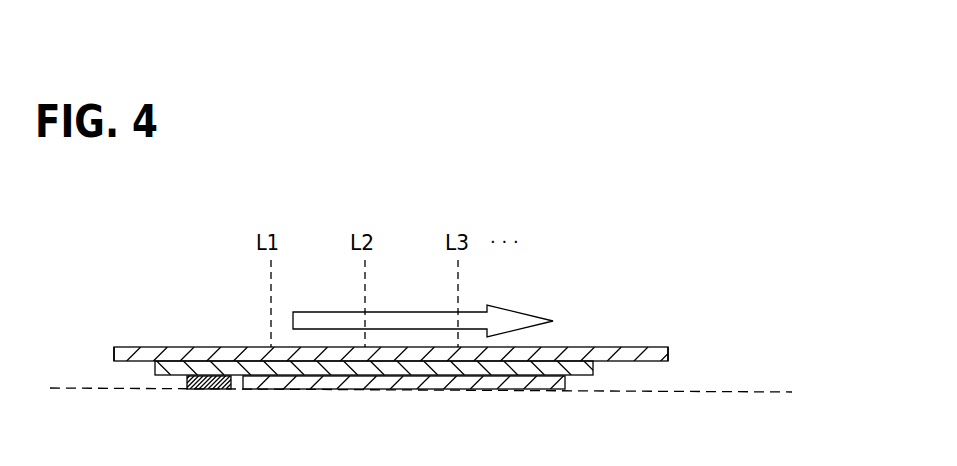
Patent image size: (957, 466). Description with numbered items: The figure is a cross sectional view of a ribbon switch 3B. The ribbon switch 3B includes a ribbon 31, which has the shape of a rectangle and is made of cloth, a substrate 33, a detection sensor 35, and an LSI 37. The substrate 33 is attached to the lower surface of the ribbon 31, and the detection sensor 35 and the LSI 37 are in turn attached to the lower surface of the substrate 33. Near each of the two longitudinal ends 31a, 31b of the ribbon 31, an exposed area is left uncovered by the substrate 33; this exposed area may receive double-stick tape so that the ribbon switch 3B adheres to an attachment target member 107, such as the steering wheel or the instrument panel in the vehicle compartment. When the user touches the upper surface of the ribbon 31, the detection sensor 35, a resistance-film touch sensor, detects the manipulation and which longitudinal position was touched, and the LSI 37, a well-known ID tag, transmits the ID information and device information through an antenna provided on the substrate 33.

The ribbon switch 3B is at (164, 271).
The ribbon 31 is at (615, 348).
The end of the ribbon 31a is at (668, 355).
The end of the ribbon 31b is at (114, 350).
The substrate 33 is at (593, 371).
The detection sensor 35 is at (450, 391).
The LSI 37 is at (207, 390).
The attachment target member 107 is at (752, 403).